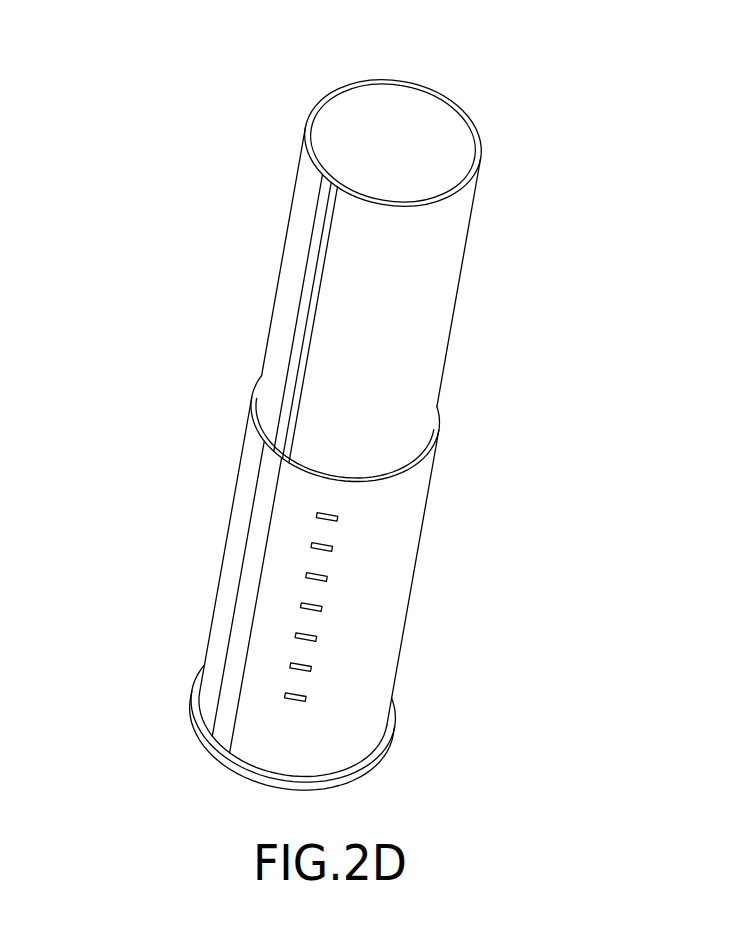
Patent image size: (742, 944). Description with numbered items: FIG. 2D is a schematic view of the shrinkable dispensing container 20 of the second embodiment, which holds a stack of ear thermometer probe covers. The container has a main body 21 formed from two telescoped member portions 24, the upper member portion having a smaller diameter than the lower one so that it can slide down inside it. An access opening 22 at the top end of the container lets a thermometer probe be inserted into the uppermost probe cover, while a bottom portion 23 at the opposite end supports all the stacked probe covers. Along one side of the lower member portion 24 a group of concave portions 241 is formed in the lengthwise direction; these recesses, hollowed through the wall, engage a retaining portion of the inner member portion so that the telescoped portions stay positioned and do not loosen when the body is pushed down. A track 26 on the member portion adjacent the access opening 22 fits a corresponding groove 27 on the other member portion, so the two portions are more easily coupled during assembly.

The shrinkable dispensing container 20 is at (120, 58).
The main body 21 is at (266, 201).
The access opening 22 is at (482, 151).
The bottom portion 23 is at (350, 777).
The member portion 24 is at (427, 297).
The track 26 is at (308, 313).
The groove 27 is at (253, 532).
The concave portions 241 is at (335, 516).